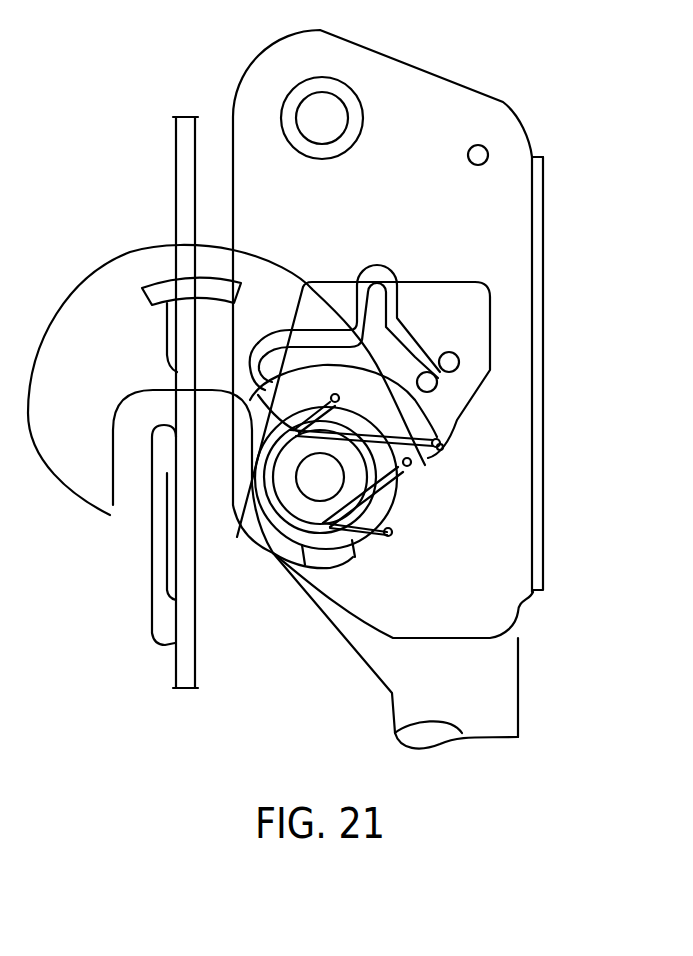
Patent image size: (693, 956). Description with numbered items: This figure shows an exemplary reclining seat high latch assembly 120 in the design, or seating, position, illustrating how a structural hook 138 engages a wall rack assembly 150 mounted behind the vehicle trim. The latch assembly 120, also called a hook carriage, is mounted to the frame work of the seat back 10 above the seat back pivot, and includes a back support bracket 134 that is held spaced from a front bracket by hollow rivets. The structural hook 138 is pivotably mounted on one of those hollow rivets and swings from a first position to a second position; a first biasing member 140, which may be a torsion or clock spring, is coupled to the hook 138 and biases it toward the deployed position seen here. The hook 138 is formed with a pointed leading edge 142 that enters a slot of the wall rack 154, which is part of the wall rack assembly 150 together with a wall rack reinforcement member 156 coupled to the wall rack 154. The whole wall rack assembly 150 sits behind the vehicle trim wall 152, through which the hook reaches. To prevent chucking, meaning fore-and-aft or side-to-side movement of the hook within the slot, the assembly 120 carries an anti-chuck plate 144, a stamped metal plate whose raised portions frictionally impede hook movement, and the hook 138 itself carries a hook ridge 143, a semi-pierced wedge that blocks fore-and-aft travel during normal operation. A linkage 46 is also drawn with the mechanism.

The seat back 10 is at (520, 716).
The actuating lever linkage 46 is at (387, 497).
The reclining seat high latch assembly 120 is at (565, 528).
The back support bracket 134 is at (458, 100).
The structural hook 138 is at (62, 320).
The first biasing member 140 is at (278, 390).
The leading edge 142 is at (122, 527).
The hook ridge 143 is at (152, 288).
The anti-chuck plate 144 is at (478, 318).
The wall rack assembly 150 is at (165, 163).
The vehicle trim wall 152 is at (197, 133).
The wall rack 154 is at (175, 668).
The wall rack reinforcement member 156 is at (155, 633).